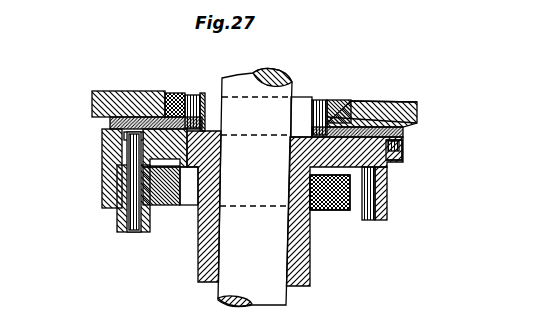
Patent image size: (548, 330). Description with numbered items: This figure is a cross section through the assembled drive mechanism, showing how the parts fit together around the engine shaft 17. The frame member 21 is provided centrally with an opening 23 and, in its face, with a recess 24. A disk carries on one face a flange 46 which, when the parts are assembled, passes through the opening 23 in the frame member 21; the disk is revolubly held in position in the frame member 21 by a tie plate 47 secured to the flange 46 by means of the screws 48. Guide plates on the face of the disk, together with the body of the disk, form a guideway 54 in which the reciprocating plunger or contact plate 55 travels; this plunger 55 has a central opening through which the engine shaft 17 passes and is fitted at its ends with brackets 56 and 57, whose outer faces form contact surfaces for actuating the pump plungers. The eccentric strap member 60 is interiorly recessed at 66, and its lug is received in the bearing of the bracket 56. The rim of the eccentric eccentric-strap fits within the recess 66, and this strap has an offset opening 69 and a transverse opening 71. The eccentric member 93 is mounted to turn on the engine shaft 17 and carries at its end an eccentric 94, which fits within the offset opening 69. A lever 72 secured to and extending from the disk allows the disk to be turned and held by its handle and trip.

The engine shaft 17 is at (250, 92).
The frame member 21 is at (92, 100).
The opening 23 is at (407, 102).
The recess 24 is at (362, 101).
The flange 46 is at (184, 96).
The tie plate 47 is at (340, 101).
The screws 48 is at (197, 97).
The guideway 54 is at (141, 91).
The reciprocating plunger 55 is at (400, 158).
The bracket 56 is at (102, 177).
The bracket 57 is at (387, 201).
The eccentric strap member 60 is at (107, 188).
The recess 66 is at (106, 208).
The offset opening 69 is at (317, 210).
The transverse opening 71 is at (186, 197).
The lever 72 is at (410, 131).
The eccentric member 93 is at (203, 240).
The eccentric 94 is at (183, 143).